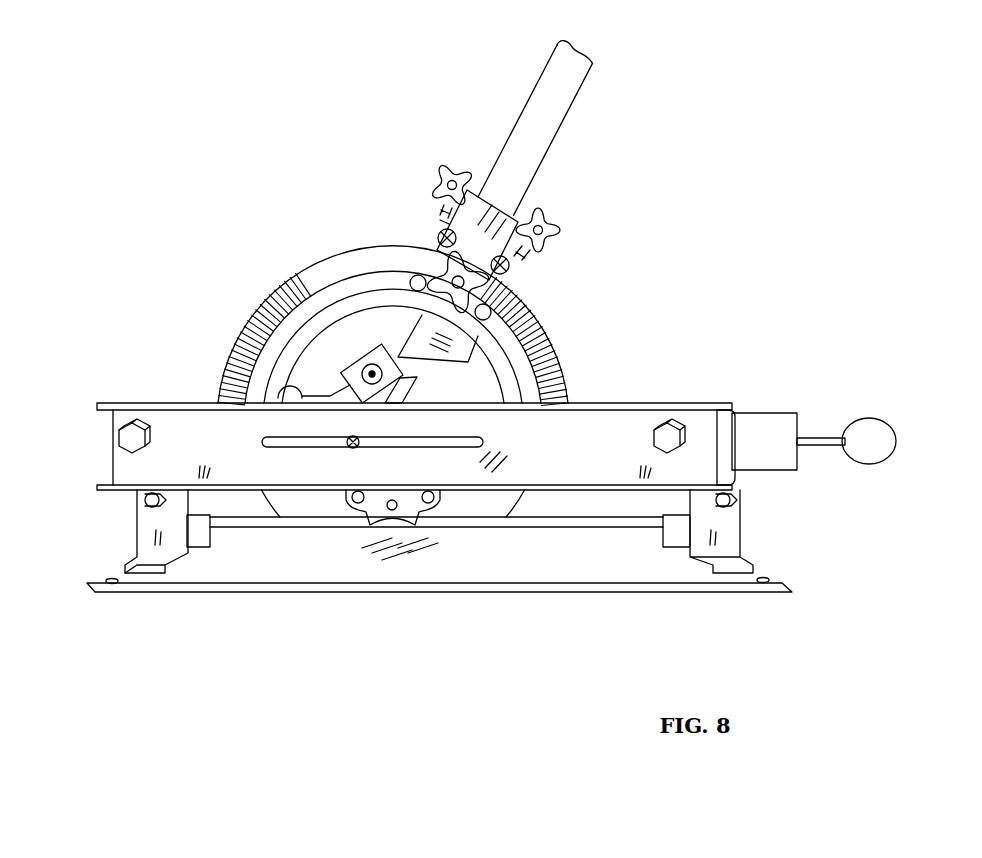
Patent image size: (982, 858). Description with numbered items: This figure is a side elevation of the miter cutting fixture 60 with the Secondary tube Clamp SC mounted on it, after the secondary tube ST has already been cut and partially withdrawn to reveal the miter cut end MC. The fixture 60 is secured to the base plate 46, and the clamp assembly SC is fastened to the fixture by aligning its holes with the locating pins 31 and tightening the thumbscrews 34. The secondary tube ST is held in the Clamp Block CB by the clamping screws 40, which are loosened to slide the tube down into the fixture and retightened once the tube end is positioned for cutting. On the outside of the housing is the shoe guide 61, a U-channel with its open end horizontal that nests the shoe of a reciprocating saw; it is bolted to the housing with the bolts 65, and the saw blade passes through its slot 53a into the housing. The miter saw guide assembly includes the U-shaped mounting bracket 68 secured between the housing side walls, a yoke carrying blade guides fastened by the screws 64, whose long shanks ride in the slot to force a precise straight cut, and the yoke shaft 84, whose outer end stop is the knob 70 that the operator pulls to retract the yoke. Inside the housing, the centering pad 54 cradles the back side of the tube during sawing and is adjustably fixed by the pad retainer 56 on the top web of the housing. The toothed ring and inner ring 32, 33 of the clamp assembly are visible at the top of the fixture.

The guide pins 31 is at (358, 497).
The toothed ring gear 32 is at (315, 277).
The ring 33 is at (352, 290).
The thumbscrews 34 is at (397, 515).
The clamping screws 40 is at (448, 164).
The base plate 46 is at (664, 573).
The slot 53a is at (483, 441).
The centering pad 54 is at (393, 372).
The pad retainer 56 is at (358, 367).
The miter cutting fixture 60 is at (92, 402).
The shoe guide 61 is at (620, 425).
The screws 64 is at (353, 447).
The bolts 65 is at (148, 446).
The mounting bracket 68 is at (770, 425).
The knob 70 is at (867, 430).
The yoke shaft 84 is at (813, 448).
The Secondary tube Clamp SC is at (92, 162).
The Clamp Block CB is at (599, 247).
The miter cut end MC is at (490, 357).
The secondary tube ST is at (563, 83).